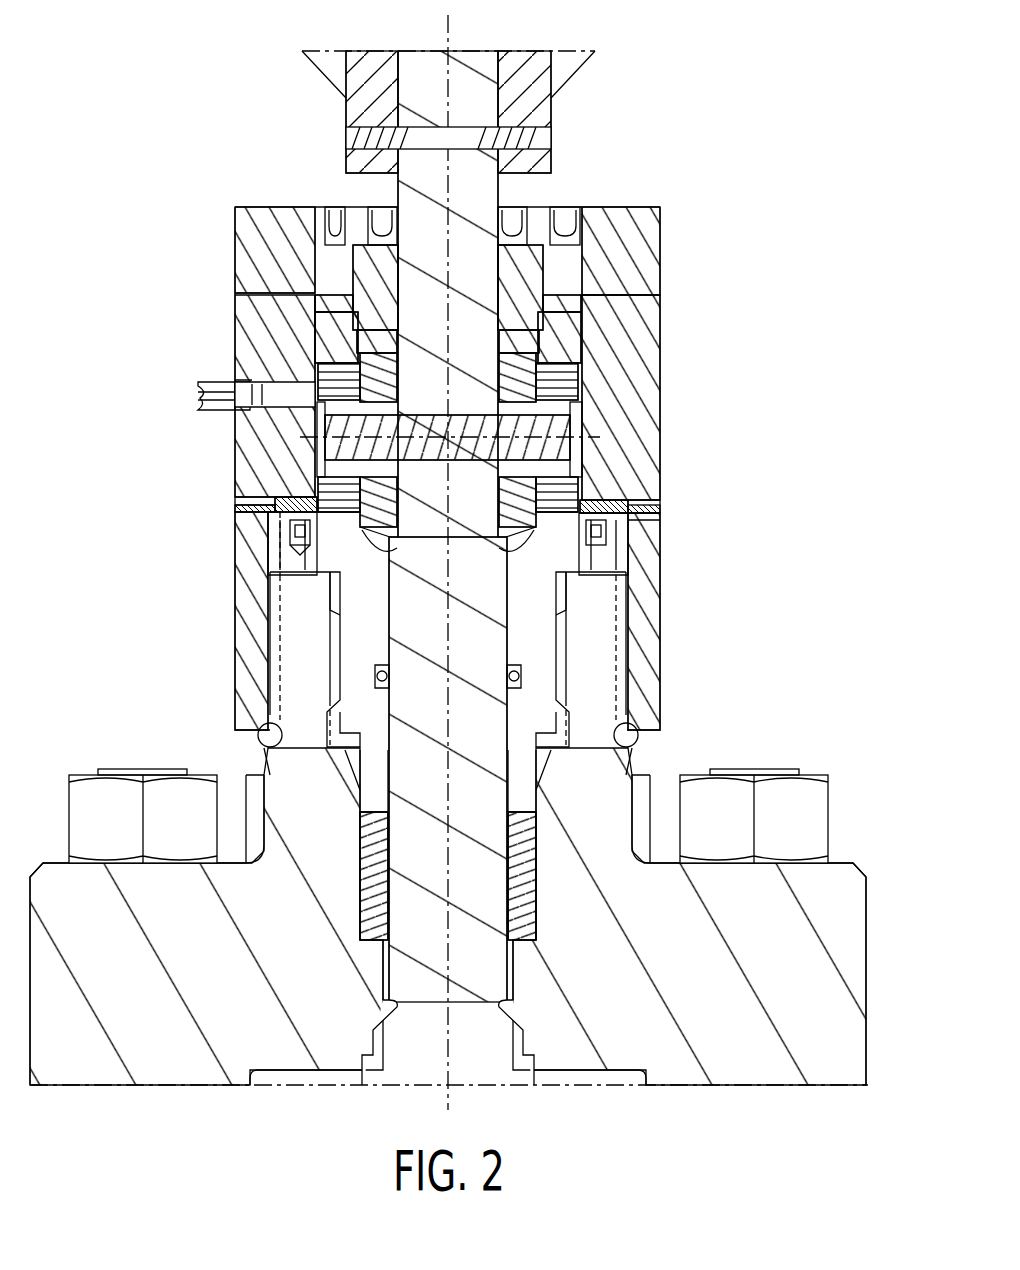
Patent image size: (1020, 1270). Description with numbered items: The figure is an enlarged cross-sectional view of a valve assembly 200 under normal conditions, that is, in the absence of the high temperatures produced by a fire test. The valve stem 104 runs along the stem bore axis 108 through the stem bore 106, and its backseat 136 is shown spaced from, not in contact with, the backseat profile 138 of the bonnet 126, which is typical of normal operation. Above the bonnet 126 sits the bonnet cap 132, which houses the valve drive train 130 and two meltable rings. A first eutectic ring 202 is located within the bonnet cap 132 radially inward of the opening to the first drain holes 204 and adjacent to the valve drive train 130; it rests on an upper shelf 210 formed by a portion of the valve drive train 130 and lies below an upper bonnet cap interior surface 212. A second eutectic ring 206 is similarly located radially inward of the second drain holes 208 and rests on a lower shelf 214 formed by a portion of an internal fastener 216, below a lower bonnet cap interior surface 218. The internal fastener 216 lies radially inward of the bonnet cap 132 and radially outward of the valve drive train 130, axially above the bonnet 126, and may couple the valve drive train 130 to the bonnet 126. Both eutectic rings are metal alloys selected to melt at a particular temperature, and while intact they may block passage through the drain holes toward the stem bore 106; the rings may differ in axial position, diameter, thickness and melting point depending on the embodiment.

The valve stem 104 is at (470, 968).
The stem bore 106 is at (420, 598).
The stem bore axis 108 is at (448, 88).
The bonnet 126 is at (787, 1040).
The valve drive train 130 is at (590, 386).
The bonnet cap 132 is at (268, 260).
The backseat 136 is at (478, 1020).
The backseat profile 138 is at (357, 1037).
The valve assembly 200 is at (728, 125).
The first eutectic ring 202 is at (565, 297).
The first drain holes 204 is at (627, 295).
The second eutectic ring 206 is at (610, 500).
The second drain holes 208 is at (650, 513).
The upper shelf 210 is at (330, 315).
The upper bonnet cap interior surface 212 is at (333, 290).
The lower shelf 214 is at (283, 512).
The internal fastener 216 is at (297, 533).
The lower bonnet cap interior surface 218 is at (283, 497).